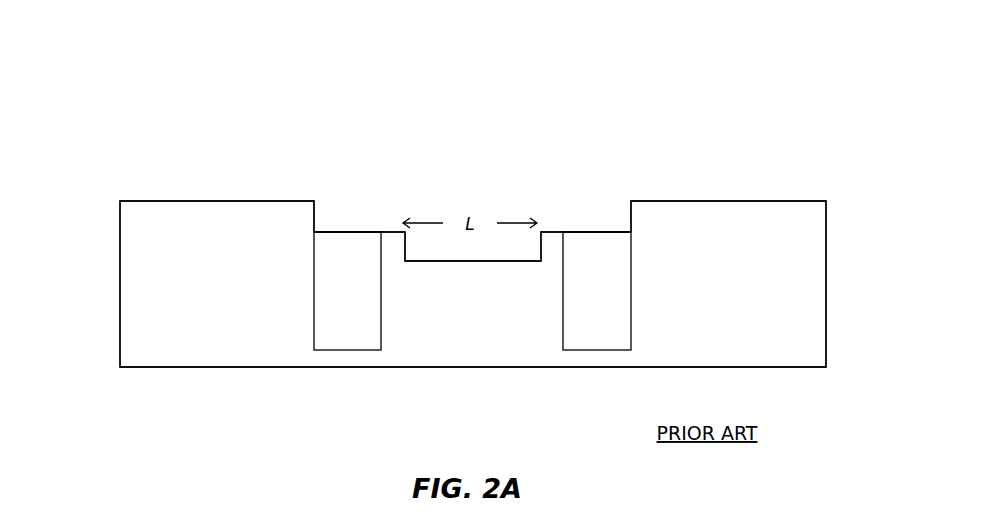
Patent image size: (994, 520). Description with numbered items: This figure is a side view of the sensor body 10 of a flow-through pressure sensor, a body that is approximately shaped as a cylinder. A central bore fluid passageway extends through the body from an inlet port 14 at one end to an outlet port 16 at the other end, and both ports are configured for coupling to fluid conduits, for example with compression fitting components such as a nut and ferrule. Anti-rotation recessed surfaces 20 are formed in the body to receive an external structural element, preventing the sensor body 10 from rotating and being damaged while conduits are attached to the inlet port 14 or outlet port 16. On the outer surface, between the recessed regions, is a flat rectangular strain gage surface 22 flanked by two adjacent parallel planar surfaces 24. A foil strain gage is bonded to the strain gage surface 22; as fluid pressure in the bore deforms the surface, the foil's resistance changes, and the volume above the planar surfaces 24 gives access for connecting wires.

The sensor body 10 is at (632, 157).
The inlet port 14 is at (833, 285).
The outlet port 16 is at (109, 278).
The anti-rotation recessed surfaces 20 is at (347, 310).
The strain gage surface 22 is at (482, 260).
The adjacent parallel planar surfaces 24 is at (357, 228).